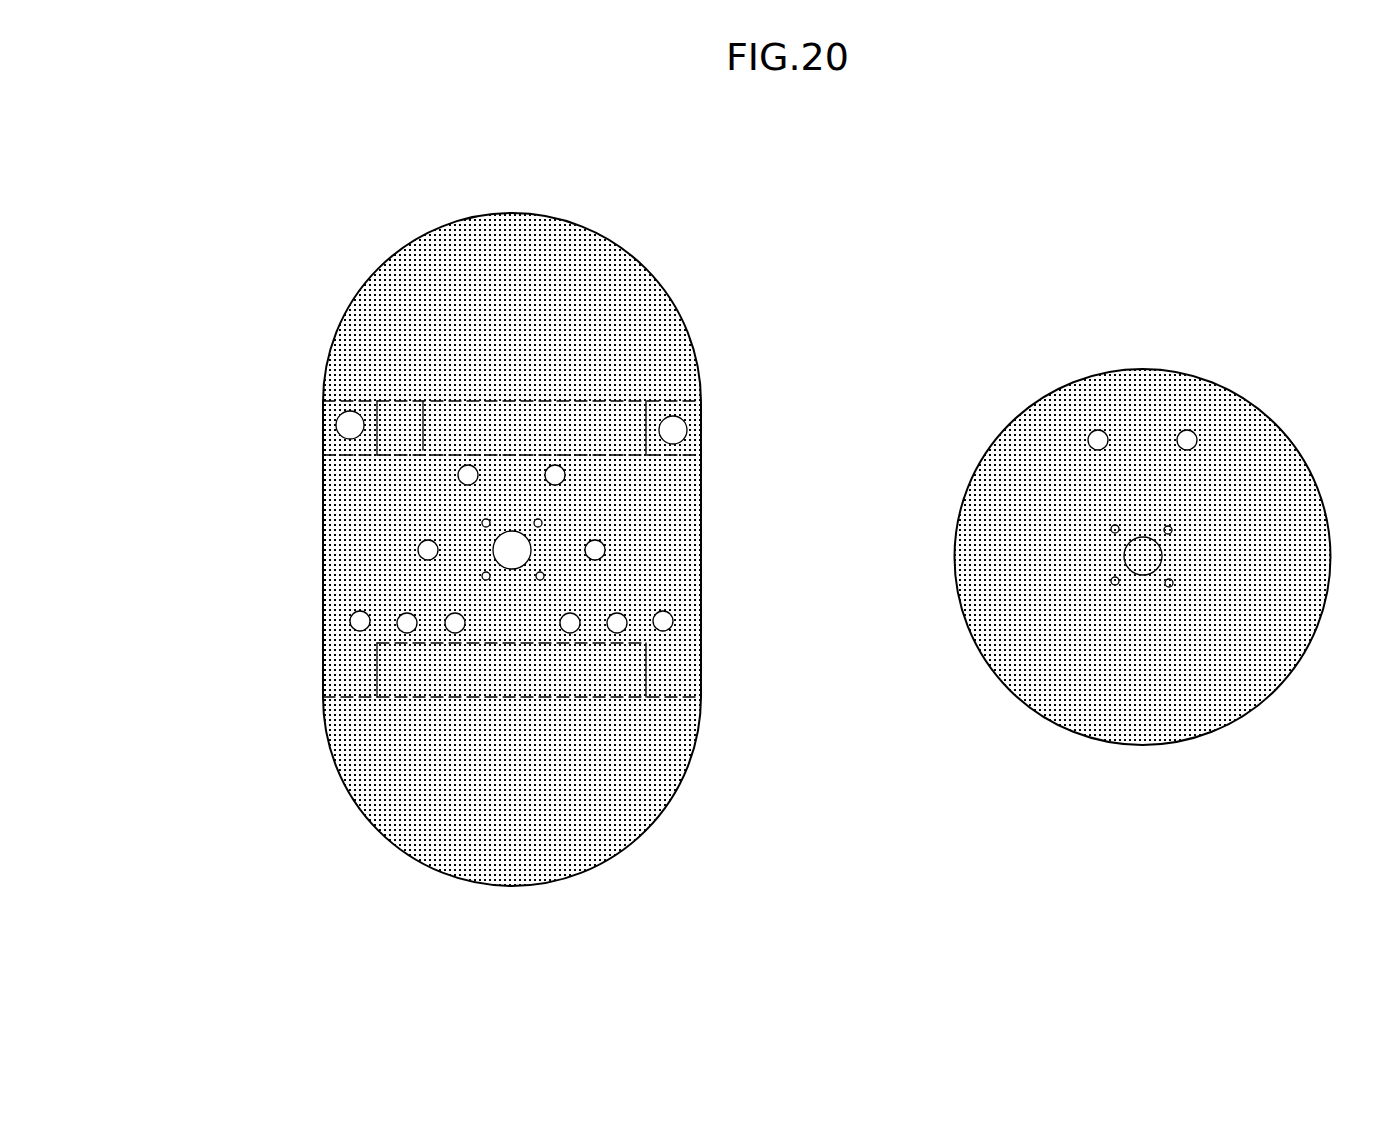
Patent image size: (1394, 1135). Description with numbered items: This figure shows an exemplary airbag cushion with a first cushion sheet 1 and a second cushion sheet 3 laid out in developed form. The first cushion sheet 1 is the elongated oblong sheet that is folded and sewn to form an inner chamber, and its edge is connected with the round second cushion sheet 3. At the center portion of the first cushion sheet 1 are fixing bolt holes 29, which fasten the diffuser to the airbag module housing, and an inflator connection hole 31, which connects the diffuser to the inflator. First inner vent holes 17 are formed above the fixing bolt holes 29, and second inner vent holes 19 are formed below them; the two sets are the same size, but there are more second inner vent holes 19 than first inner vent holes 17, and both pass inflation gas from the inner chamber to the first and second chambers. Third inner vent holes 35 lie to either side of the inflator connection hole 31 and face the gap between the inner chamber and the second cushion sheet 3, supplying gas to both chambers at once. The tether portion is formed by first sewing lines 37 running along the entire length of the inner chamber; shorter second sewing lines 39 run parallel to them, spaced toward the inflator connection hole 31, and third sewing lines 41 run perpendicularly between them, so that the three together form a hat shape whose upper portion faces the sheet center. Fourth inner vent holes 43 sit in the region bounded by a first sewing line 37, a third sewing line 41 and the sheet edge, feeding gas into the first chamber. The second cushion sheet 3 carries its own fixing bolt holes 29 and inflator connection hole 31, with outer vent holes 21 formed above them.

The first cushion sheet 1 is at (600, 275).
The second cushion sheet 3 is at (1258, 592).
The first inner vent holes 17 is at (547, 466).
The second inner vent holes 19 is at (396, 618).
The outer vent holes 21 is at (1179, 432).
The fixing bolt holes 29 is at (476, 515).
The inflator connection hole 31 is at (503, 543).
The third inner vent holes 35 is at (420, 542).
The first sewing lines 37 is at (595, 393).
The second sewing lines 39 is at (415, 393).
The third sewing lines 41 is at (320, 443).
The fourth inner vent holes 43 is at (336, 413).